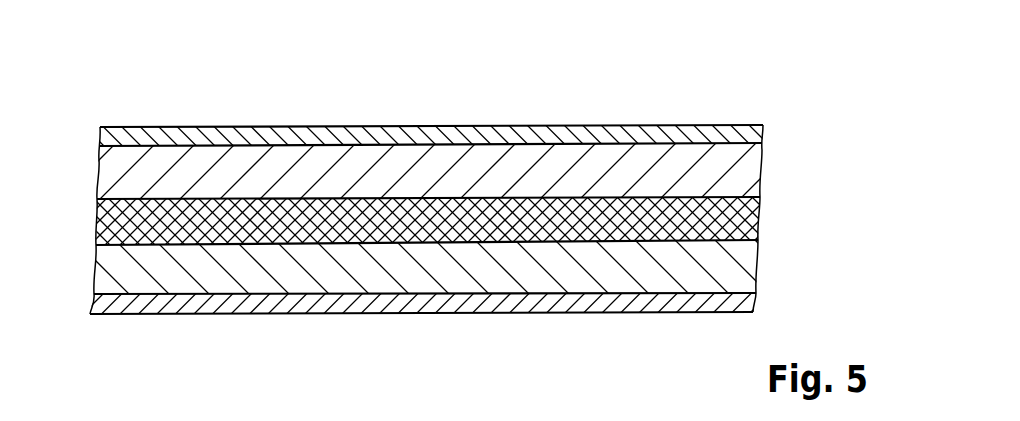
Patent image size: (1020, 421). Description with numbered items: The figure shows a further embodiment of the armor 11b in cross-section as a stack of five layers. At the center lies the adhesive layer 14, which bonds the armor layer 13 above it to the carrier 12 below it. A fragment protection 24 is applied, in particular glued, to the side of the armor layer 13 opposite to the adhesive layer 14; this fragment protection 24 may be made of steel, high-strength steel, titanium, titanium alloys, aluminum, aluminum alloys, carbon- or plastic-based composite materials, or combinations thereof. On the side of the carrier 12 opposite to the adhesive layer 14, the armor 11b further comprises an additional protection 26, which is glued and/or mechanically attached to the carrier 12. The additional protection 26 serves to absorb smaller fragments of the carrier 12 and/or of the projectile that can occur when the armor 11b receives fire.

The armor 11b is at (712, 78).
The fragment protection 24 is at (480, 126).
The armor layer 13 is at (747, 168).
The adhesive layer 14 is at (750, 220).
The carrier 12 is at (742, 272).
The additional protection 26 is at (503, 307).